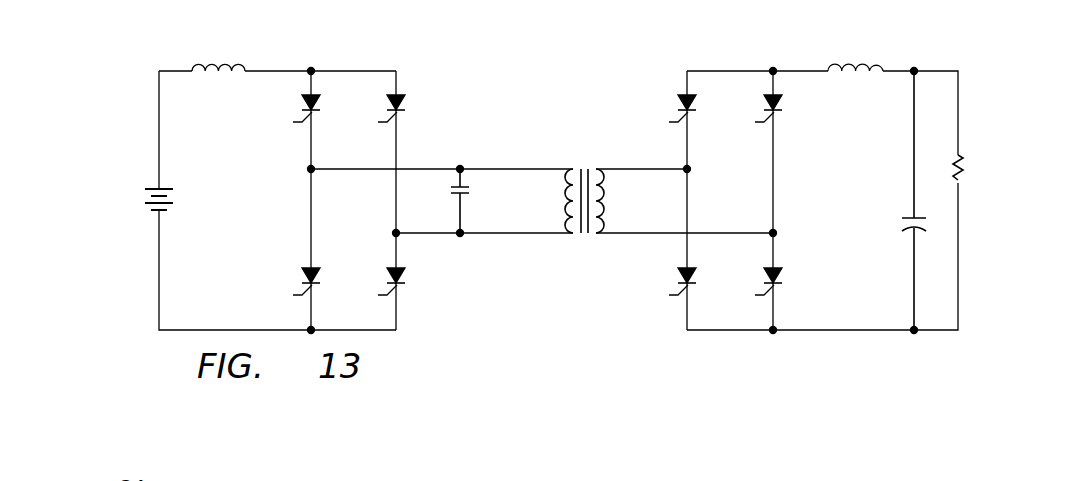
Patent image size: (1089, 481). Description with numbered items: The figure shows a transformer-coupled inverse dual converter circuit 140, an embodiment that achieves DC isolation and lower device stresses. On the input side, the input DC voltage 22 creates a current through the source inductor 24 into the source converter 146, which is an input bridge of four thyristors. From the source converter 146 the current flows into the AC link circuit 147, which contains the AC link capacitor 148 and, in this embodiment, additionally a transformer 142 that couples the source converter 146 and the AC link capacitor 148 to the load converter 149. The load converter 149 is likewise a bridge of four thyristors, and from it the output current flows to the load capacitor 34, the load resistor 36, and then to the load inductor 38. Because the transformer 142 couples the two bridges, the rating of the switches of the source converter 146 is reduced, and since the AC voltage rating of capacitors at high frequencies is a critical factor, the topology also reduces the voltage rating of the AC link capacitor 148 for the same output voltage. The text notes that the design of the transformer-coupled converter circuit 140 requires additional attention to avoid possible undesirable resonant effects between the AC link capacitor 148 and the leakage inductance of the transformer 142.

The input DC voltage 22 is at (127, 216).
The source inductor 24 is at (183, 40).
The load capacitor 34 is at (878, 245).
The load resistor 36 is at (976, 162).
The load inductor 38 is at (886, 37).
The transformer-coupled inverse dual converter circuit 140 is at (1008, 39).
The transformer 142 is at (567, 271).
The source converter 146 is at (415, 84).
The AC link circuit 147 is at (503, 146).
The AC link capacitor 148 is at (471, 196).
The load converter 149 is at (665, 86).